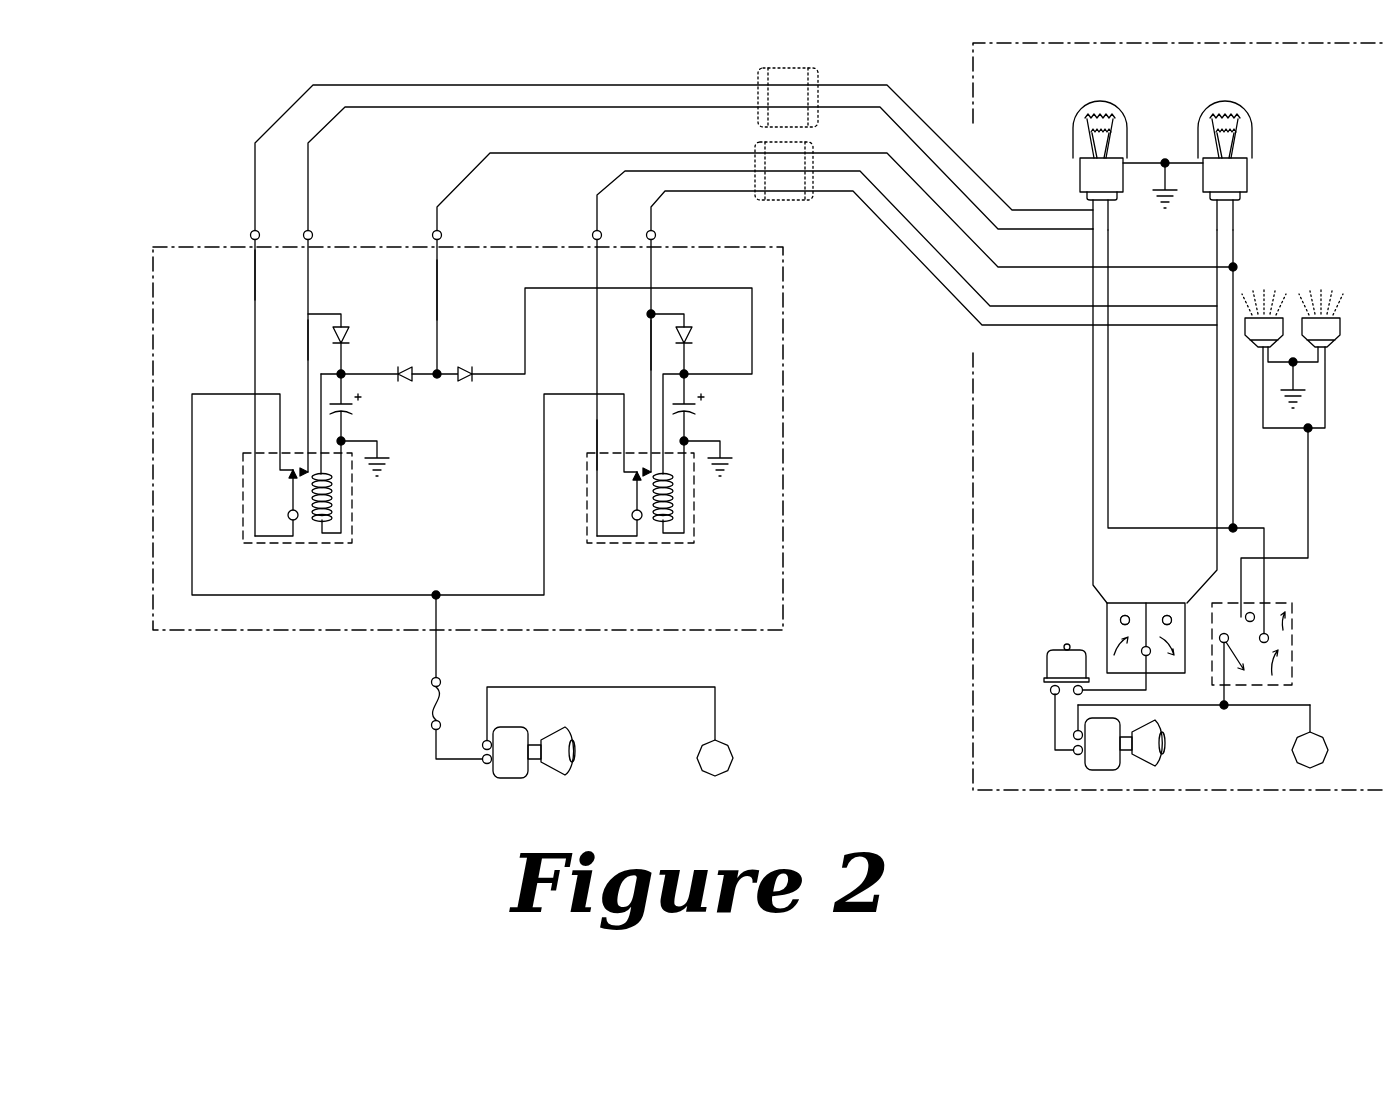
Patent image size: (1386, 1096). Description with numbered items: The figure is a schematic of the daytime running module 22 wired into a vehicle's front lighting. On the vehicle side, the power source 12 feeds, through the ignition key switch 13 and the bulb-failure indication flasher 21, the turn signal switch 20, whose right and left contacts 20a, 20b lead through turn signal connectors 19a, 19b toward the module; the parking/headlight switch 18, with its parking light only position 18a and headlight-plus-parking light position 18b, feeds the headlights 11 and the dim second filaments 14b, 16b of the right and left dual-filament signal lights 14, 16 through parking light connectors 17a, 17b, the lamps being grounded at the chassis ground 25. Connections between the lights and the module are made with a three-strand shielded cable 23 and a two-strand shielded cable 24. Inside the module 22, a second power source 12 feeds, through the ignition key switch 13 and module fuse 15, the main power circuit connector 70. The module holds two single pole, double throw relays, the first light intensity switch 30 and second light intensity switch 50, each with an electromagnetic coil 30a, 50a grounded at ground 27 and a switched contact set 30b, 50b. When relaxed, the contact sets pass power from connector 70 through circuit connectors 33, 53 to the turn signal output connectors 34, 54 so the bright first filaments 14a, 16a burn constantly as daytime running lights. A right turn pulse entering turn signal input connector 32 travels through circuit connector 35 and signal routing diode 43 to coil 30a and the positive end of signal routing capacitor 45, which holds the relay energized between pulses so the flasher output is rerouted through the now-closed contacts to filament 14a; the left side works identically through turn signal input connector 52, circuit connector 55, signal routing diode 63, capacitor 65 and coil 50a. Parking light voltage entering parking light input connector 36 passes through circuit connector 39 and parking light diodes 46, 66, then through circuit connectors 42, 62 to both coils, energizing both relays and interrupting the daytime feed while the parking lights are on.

The headlights 11 is at (1307, 288).
The power source 12 is at (697, 772).
The ignition key switch 13 is at (582, 738).
The first vehicular signal light 14 is at (1250, 175).
The first filament 14a is at (1225, 115).
The second filament 14b is at (1233, 128).
The module fuse 15 is at (445, 700).
The second vehicular signal light 16 is at (1072, 180).
The first filament 16a is at (1100, 118).
The second filament 16b is at (1107, 128).
The parking light connector 17a is at (1228, 482).
The parking light connector 17b is at (1115, 375).
The parking/headlight switch 18 is at (1297, 675).
The parking light only position 18a is at (1287, 652).
The headlight-plus-parking light position 18b is at (1257, 613).
The turn signal connector 19a is at (1212, 418).
The turn signal connector 19b is at (1082, 475).
The turn signal switch 20 is at (1107, 632).
The turn signal connector 20a is at (1167, 615).
The turn signal connector 20b is at (1125, 615).
The bulb-failure indication flasher 21 is at (1047, 650).
The daytime running module 22 is at (148, 240).
The three-strand shielded cable 23 is at (757, 113).
The two-strand shielded cable 24 is at (808, 142).
The vehicle chassis ground 25 is at (1152, 207).
The ground 27 is at (382, 477).
The first light intensity switch 30 is at (673, 547).
The electromagnetic coil 30a is at (677, 515).
The switched contact set 30b is at (627, 503).
The turn signal input connector 32 is at (643, 228).
The circuit connector 33 is at (595, 442).
The turn signal output connector 34 is at (590, 228).
The circuit connector 35 is at (647, 340).
The parking light input connector 36 is at (430, 228).
The circuit connector 39 is at (442, 295).
The circuit connector 42 is at (520, 325).
The signal routing diode 43 is at (697, 335).
The signal routing capacitor 45 is at (692, 412).
The parking light diode 46 is at (464, 357).
The second light intensity switch 50 is at (330, 543).
The electromagnetic coil 50a is at (335, 515).
The switched contact set 50b is at (287, 503).
The turn signal input connector 52 is at (303, 230).
The circuit connector 53 is at (252, 290).
The turn signal output connector 54 is at (250, 230).
The circuit connector 55 is at (303, 342).
The circuit connector 62 is at (363, 373).
The signal routing diode 63 is at (350, 330).
The signal routing capacitor 65 is at (355, 412).
The parking light diode 66 is at (412, 385).
The main power circuit connector 70 is at (232, 390).